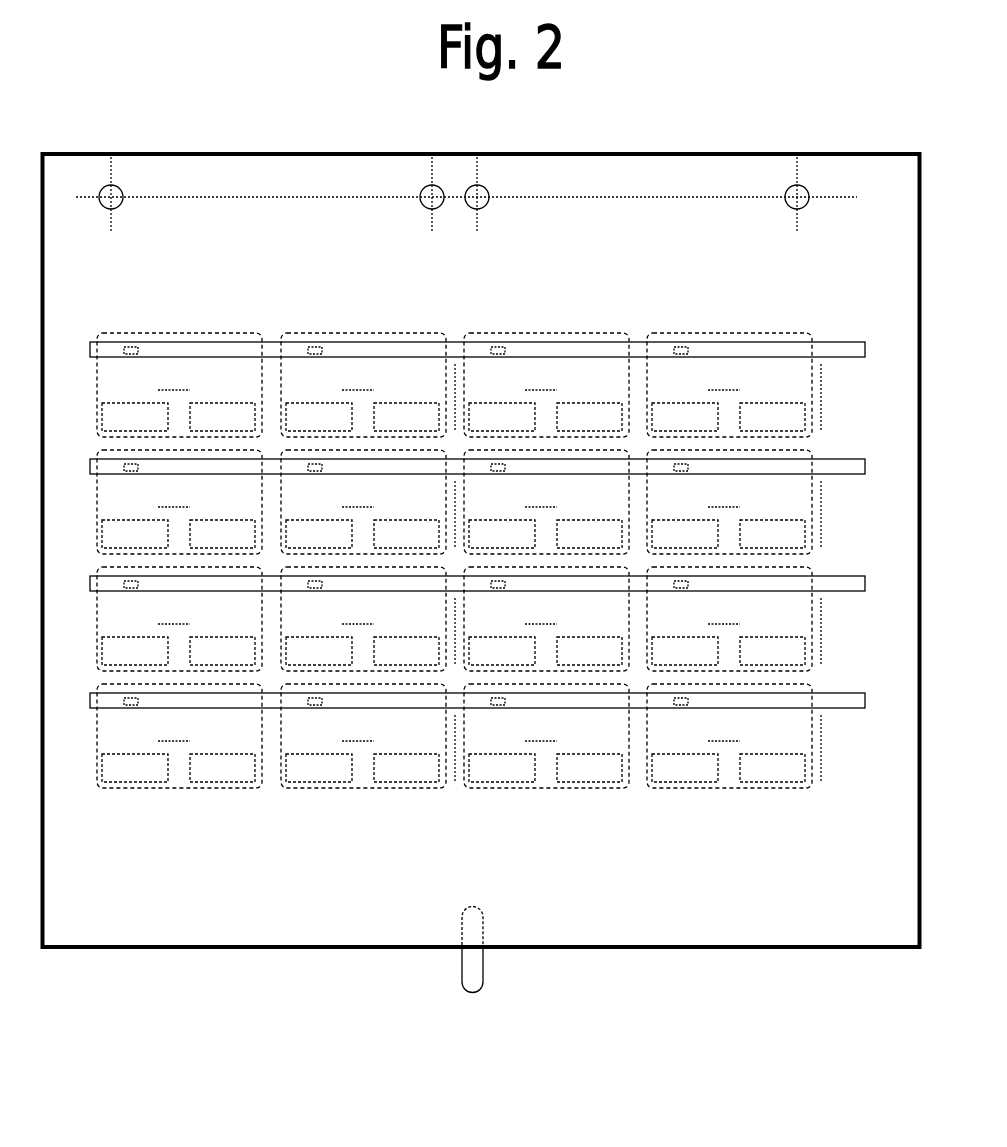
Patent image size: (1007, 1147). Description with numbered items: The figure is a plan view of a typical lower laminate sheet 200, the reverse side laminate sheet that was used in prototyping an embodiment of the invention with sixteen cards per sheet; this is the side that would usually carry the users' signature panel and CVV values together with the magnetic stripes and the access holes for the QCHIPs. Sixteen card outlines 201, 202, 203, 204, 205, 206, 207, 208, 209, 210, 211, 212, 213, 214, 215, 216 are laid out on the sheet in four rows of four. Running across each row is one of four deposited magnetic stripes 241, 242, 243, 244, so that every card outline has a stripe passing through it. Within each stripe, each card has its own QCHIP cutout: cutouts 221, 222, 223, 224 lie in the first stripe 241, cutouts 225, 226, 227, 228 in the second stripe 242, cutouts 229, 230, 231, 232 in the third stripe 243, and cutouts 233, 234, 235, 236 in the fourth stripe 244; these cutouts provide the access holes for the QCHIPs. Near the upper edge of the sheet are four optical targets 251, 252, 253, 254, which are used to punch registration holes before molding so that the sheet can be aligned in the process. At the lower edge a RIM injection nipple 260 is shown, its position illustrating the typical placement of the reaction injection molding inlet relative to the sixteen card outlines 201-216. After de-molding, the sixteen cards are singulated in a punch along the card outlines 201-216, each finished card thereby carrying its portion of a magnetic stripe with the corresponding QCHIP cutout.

The lower laminate sheet 200 is at (222, 87).
The card outline 201 is at (179, 385).
The card outline 202 is at (363, 385).
The card outline 203 is at (546, 385).
The card outline 204 is at (729, 385).
The card outline 205 is at (179, 502).
The card outline 206 is at (363, 502).
The card outline 207 is at (546, 502).
The card outline 208 is at (729, 502).
The card outline 209 is at (179, 619).
The card outline 210 is at (363, 619).
The card outline 211 is at (546, 619).
The card outline 212 is at (729, 619).
The card outline 213 is at (179, 736).
The card outline 214 is at (363, 736).
The card outline 215 is at (546, 736).
The card outline 216 is at (729, 736).
The QCHIP cutout 221 is at (139, 350).
The QCHIP cutout 222 is at (323, 350).
The QCHIP cutout 223 is at (506, 350).
The QCHIP cutout 224 is at (689, 350).
The QCHIP cutout 225 is at (139, 467).
The QCHIP cutout 226 is at (323, 467).
The QCHIP cutout 227 is at (506, 467).
The QCHIP cutout 228 is at (689, 467).
The QCHIP cutout 229 is at (139, 584).
The QCHIP cutout 230 is at (323, 584).
The QCHIP cutout 231 is at (506, 584).
The QCHIP cutout 232 is at (689, 584).
The QCHIP cutout 233 is at (139, 701).
The QCHIP cutout 234 is at (323, 701).
The QCHIP cutout 235 is at (506, 701).
The QCHIP cutout 236 is at (689, 701).
The deposited magnetic stripe 241 is at (825, 344).
The deposited magnetic stripe 242 is at (825, 461).
The deposited magnetic stripe 243 is at (825, 578).
The deposited magnetic stripe 244 is at (825, 695).
The optical target 251 is at (119, 207).
The optical target 252 is at (424, 207).
The optical target 253 is at (485, 207).
The optical target 254 is at (789, 207).
The RIM injection nipple 260 is at (461, 967).